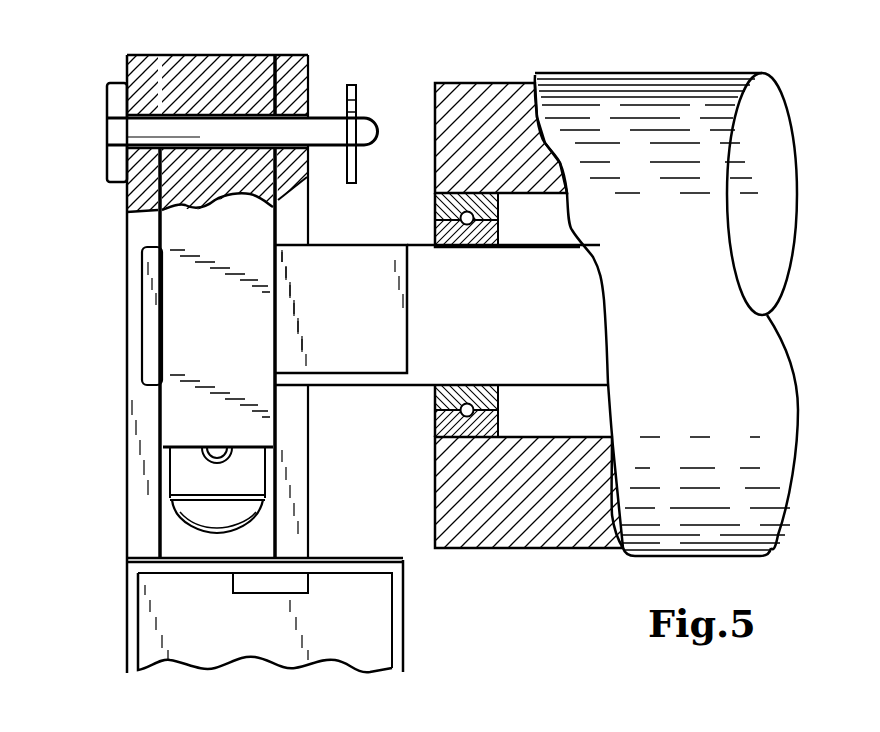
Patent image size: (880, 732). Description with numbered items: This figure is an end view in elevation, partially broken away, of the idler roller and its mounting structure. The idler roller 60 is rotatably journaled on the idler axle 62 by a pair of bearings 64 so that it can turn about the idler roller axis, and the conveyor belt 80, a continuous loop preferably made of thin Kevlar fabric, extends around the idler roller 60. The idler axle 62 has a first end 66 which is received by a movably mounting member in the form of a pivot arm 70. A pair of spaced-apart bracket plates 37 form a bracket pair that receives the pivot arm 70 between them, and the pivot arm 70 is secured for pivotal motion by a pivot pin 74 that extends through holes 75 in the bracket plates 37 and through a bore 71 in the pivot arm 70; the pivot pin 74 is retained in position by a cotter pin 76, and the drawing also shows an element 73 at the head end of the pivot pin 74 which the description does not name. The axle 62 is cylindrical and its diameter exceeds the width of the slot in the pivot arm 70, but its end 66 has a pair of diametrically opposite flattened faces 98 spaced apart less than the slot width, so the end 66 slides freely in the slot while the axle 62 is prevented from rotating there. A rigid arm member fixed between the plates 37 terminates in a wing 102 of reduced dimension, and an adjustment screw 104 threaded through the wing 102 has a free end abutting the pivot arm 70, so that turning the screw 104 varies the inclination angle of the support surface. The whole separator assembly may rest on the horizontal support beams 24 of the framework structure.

The horizontal support beam 24 is at (403, 657).
The bracket plate 37 is at (147, 57).
The idler roller 60 is at (547, 540).
The idler axle 62 is at (441, 315).
The bearing 64 is at (437, 415).
The first end of idler axle 66 is at (142, 333).
The pivot arm 70 is at (113, 228).
The bore 71 is at (167, 120).
The cap 73 is at (127, 77).
The pivot pin 74 is at (192, 127).
The hole 75 is at (308, 82).
The cotter pin 76 is at (355, 97).
The conveyor belt 80 is at (666, 314).
The flattened face 98 is at (330, 260).
The wing 102 is at (180, 472).
The adjustment screw 104 is at (180, 523).